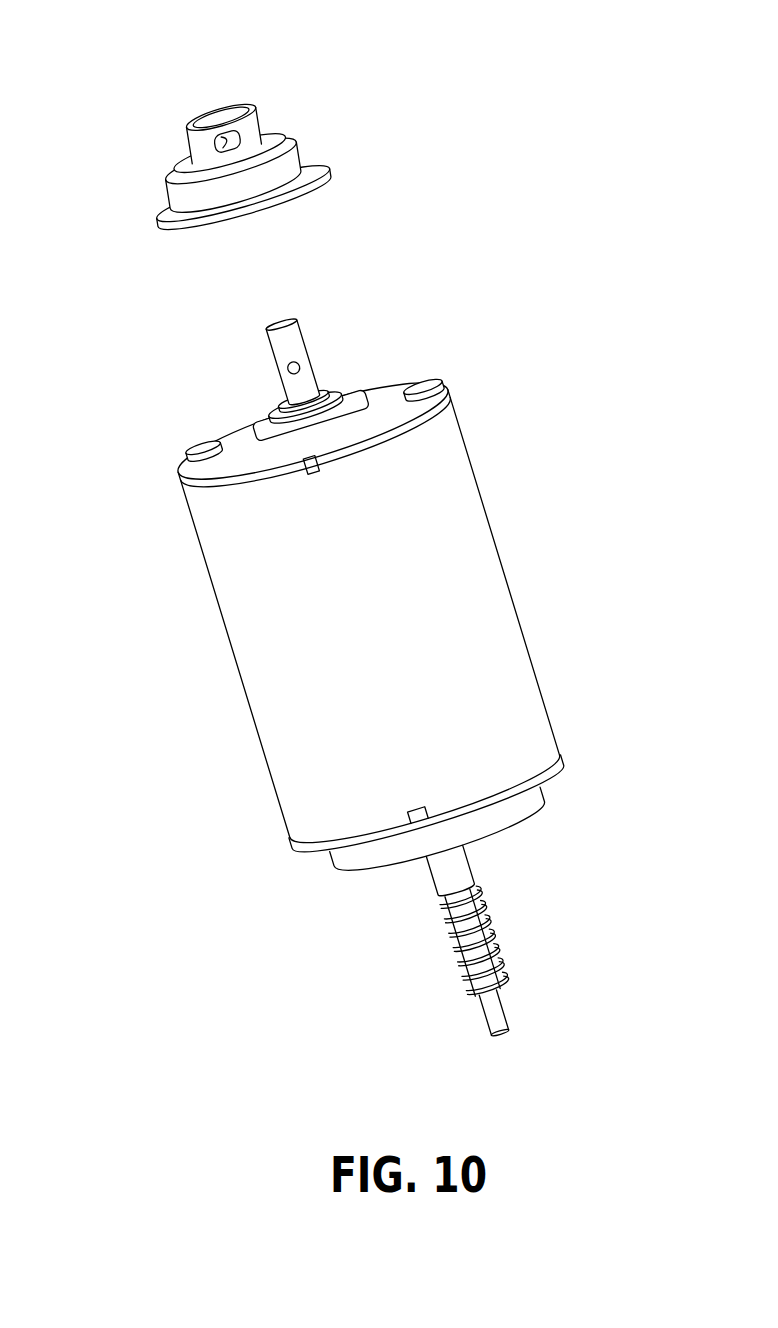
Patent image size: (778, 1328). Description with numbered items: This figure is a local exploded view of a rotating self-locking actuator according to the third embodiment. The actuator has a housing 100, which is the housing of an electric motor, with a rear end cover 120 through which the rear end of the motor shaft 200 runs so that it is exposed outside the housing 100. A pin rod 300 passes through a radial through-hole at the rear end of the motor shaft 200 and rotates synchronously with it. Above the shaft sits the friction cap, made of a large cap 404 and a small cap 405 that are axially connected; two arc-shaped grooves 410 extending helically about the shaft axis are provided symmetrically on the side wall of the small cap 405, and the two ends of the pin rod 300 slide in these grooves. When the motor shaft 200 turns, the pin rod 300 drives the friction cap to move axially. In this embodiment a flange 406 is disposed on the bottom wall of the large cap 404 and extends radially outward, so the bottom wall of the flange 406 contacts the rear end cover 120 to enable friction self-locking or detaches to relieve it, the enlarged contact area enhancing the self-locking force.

The housing 100 is at (487, 577).
The rear end cover 120 is at (393, 388).
The motor shaft 200 is at (302, 342).
The pin rod 300 is at (287, 368).
The large cap 404 is at (297, 152).
The small cap 405 is at (200, 138).
The flange 406 is at (307, 173).
The arc-shaped groove 410 is at (237, 133).